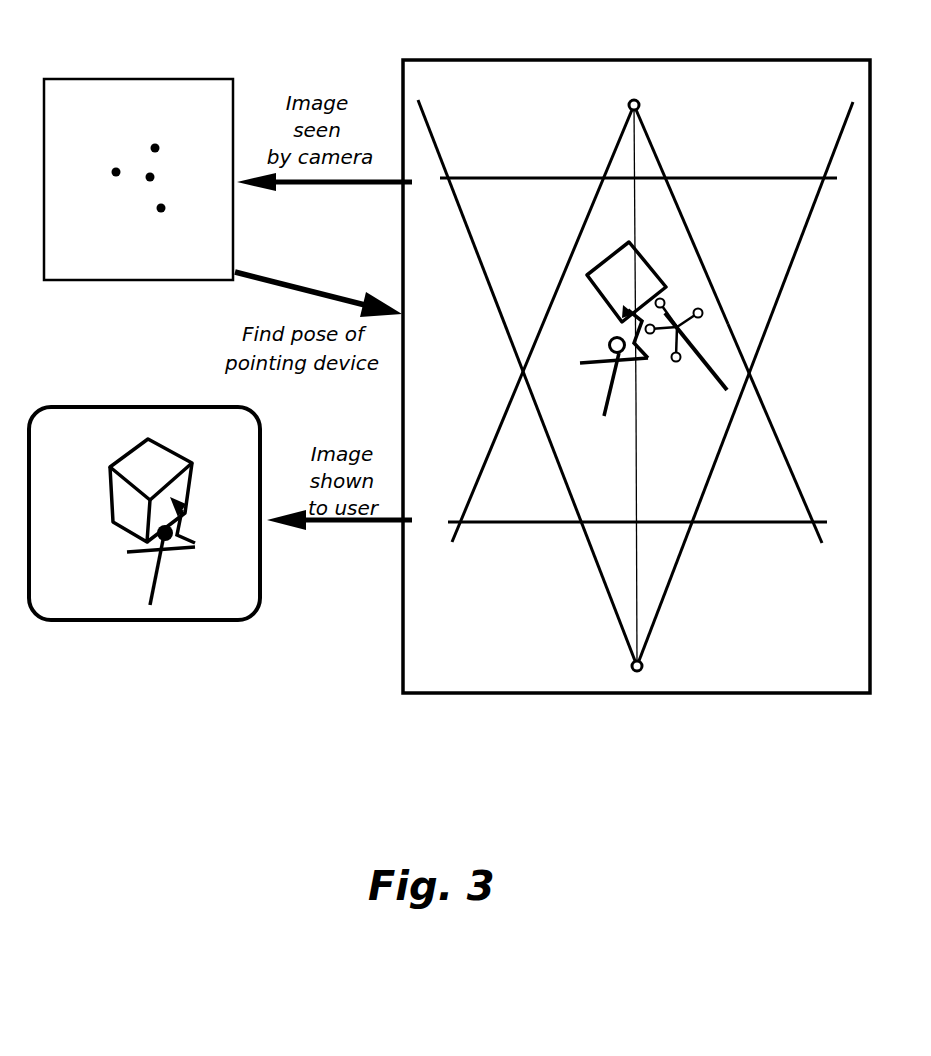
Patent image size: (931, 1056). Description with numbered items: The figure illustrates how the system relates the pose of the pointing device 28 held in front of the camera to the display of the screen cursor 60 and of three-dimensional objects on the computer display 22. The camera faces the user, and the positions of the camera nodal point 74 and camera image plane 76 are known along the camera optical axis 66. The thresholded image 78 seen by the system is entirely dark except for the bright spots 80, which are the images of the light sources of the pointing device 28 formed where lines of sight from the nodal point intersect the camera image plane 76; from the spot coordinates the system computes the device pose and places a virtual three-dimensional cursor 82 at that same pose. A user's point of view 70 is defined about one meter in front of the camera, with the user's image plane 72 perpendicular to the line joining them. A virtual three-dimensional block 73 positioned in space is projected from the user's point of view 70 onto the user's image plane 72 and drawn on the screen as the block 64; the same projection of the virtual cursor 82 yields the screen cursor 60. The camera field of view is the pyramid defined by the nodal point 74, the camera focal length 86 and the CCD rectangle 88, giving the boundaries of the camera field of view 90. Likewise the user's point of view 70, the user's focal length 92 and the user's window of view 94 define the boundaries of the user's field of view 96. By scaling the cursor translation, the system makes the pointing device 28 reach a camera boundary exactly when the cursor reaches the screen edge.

The computer display 22 is at (67, 428).
The pointing device 28 is at (713, 370).
The screen cursor 60 is at (167, 553).
The block 64 is at (127, 462).
The camera optical axis 66 is at (640, 160).
The user's point of view 70 is at (635, 673).
The user's image plane 72 is at (543, 523).
The virtual 3D block 73 is at (610, 280).
The camera nodal point 74 is at (635, 98).
The camera image plane 76 is at (547, 177).
The thresholded image 78 is at (228, 78).
The bright spot 80 is at (152, 147).
The virtual 3D cursor 82 is at (613, 370).
The camera focal length 86 is at (643, 117).
The CCD rectangle 88 is at (620, 177).
The boundaries of camera field of view 90 is at (793, 460).
The user's focal length 92 is at (638, 555).
The user's window of view 94 is at (613, 523).
The boundaries of user's field of view 96 is at (803, 240).